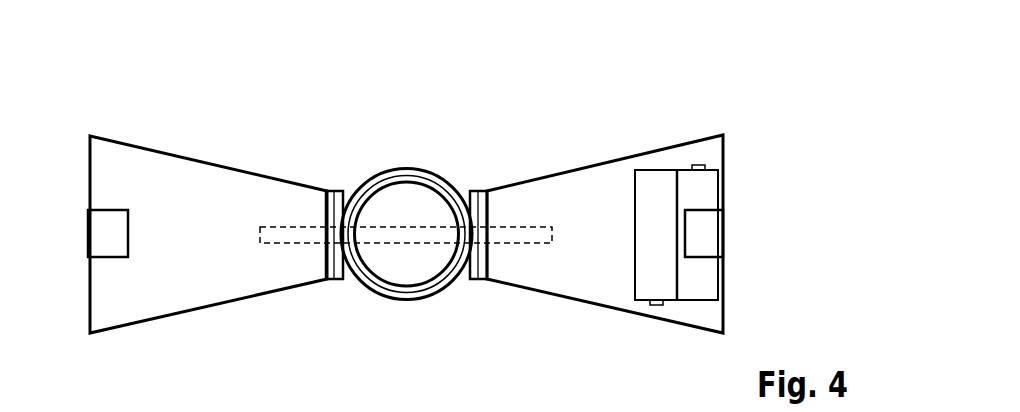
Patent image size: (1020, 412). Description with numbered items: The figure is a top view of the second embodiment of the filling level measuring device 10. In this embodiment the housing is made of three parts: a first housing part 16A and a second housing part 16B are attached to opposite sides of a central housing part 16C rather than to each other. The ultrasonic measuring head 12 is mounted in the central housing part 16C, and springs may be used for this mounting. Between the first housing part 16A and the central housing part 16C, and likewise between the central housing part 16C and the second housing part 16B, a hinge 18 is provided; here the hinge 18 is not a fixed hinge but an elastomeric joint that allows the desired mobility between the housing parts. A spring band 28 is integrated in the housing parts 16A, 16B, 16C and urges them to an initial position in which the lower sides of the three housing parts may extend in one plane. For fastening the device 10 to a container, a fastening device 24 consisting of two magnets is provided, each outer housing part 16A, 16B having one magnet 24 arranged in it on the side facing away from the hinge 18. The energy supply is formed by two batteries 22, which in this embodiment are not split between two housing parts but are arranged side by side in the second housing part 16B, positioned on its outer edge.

The filling level measuring device 10 is at (653, 102).
The ultrasonic measuring head 12 is at (400, 200).
The first housing part 16A is at (196, 157).
The second housing part 16B is at (588, 163).
The central housing part 16C is at (430, 170).
The hinge 18 is at (333, 192).
The batteries 22 is at (652, 283).
The fastening device 24 is at (102, 238).
The spring band 28 is at (293, 262).